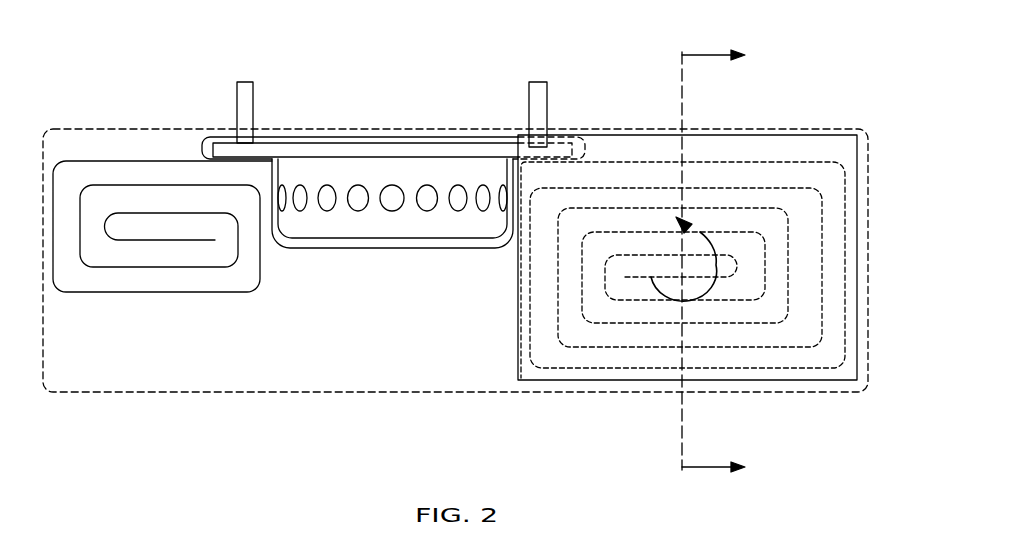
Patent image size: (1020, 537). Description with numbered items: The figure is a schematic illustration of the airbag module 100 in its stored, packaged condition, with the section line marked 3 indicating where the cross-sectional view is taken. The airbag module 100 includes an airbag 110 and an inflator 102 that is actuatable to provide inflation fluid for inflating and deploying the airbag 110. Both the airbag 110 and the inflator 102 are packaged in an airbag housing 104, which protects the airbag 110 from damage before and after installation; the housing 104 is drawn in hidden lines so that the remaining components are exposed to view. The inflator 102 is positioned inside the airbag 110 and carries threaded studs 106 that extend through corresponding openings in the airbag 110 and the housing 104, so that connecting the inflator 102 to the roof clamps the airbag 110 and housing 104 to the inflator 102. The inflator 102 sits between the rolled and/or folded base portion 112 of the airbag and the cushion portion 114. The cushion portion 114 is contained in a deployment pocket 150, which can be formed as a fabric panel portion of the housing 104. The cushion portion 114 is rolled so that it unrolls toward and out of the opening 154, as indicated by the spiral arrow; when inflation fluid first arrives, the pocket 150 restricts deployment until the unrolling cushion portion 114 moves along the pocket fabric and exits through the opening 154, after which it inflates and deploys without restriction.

The airbag module 100 is at (104, 92).
The inflator 102 is at (390, 176).
The airbag housing 104 is at (355, 392).
The threaded studs 106 is at (243, 95).
The airbag 110 is at (332, 250).
The base portion 112 is at (150, 293).
The cushion portion 114 is at (650, 373).
The deployment pocket 150 is at (805, 147).
The opening 154 is at (498, 326).
The section line 3- 3 is at (722, 262).